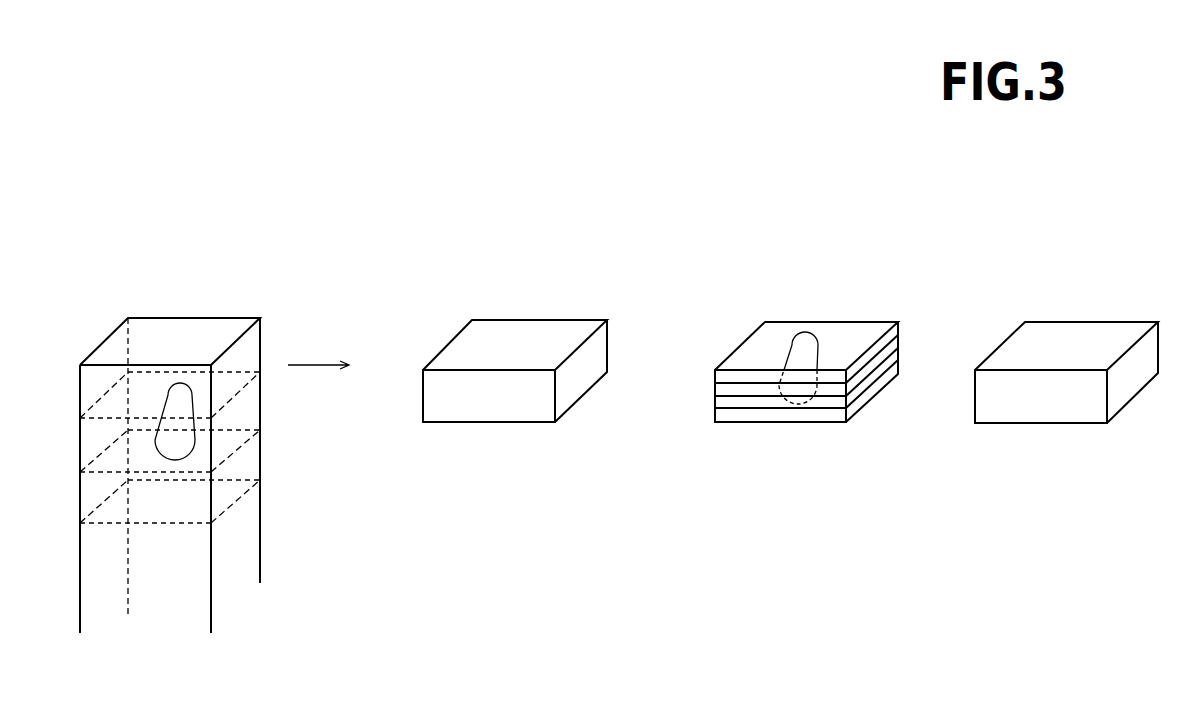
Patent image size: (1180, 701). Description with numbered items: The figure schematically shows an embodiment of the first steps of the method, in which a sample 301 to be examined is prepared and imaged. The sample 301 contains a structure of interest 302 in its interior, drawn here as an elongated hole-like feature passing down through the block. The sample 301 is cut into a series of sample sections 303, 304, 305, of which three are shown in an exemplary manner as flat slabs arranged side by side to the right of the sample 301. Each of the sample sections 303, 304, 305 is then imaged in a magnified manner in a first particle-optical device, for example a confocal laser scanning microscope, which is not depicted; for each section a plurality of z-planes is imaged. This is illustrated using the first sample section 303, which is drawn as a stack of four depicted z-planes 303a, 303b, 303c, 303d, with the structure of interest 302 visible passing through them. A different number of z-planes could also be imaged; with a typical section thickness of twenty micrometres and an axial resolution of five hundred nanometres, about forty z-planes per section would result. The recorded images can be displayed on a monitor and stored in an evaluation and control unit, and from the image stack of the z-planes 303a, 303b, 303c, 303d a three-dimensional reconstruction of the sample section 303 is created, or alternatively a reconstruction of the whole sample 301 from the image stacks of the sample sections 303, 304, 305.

The sample 301 is at (110, 333).
The structure of interest 302 is at (177, 385).
The first sample section 303 is at (845, 347).
The z-plane 303a is at (722, 367).
The z-plane 303b is at (728, 403).
The z-plane 303c is at (767, 403).
The z-plane 303d is at (827, 407).
The sample section 304 is at (527, 347).
The sample section 305 is at (1117, 347).